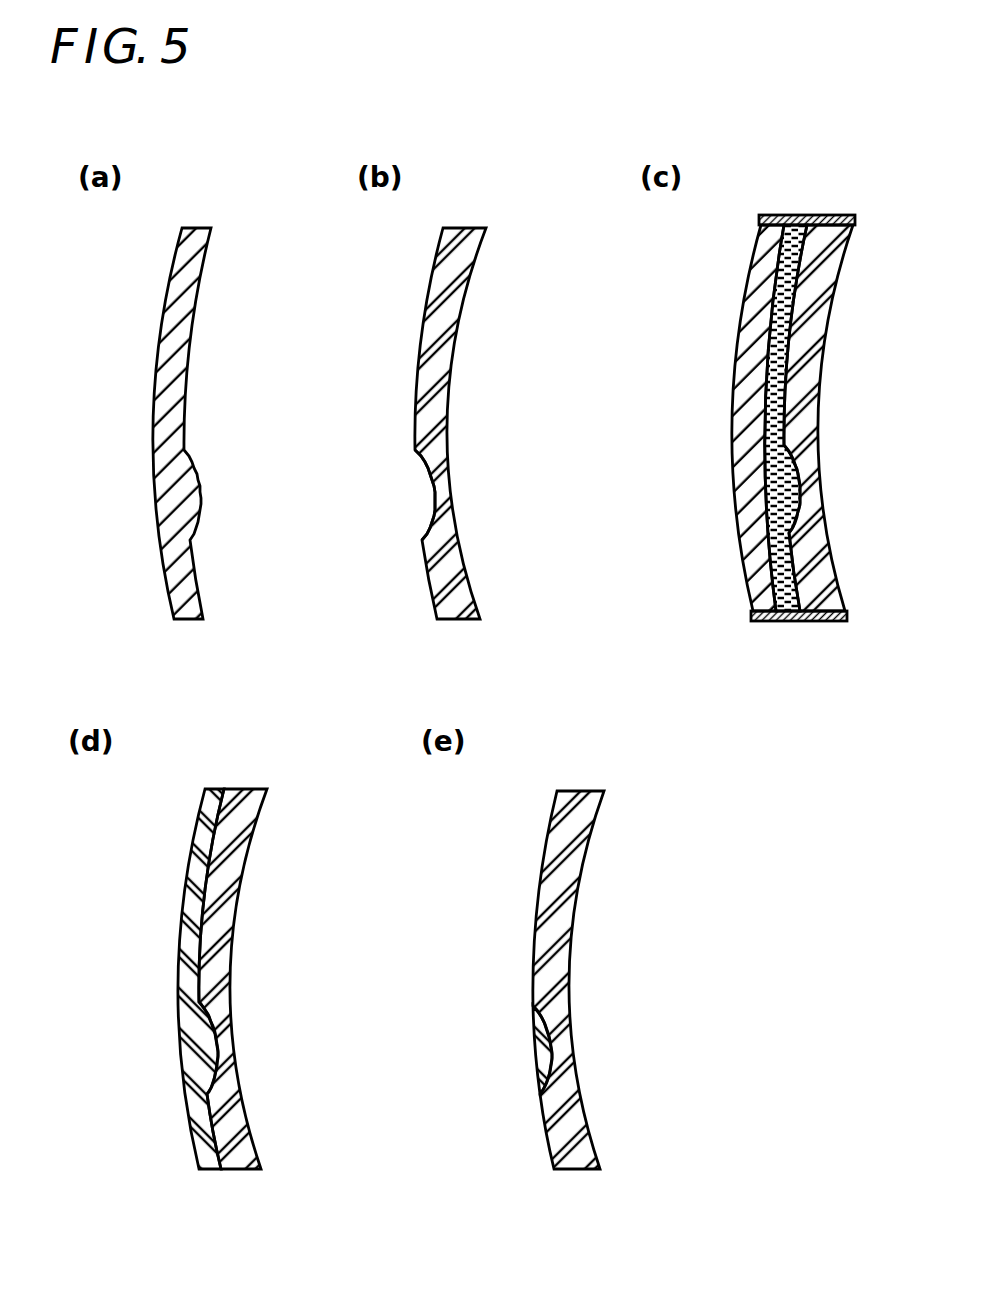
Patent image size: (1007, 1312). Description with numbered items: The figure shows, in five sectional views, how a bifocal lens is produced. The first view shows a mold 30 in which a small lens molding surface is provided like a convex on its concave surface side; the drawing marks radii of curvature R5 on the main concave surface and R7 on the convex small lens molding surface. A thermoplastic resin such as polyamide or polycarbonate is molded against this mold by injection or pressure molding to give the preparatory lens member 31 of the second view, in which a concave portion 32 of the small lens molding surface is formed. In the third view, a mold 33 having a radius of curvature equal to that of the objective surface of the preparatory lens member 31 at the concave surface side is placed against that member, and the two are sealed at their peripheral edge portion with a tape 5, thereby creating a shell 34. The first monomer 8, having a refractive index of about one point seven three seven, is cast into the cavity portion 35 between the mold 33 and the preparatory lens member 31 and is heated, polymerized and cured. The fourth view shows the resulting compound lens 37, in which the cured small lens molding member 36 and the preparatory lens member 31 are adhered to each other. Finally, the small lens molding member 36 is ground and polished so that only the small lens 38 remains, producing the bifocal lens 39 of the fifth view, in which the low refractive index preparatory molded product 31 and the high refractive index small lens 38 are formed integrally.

The tape 5 is at (797, 216).
The first monomer 8 is at (778, 303).
The mold 30 is at (170, 324).
The preparatory lens member 31 is at (447, 341).
The concave portion 32 is at (395, 465).
The mold 33 is at (748, 359).
The shell 34 is at (783, 393).
The cavity portion 35 is at (799, 560).
The small lens molding member 36 is at (185, 957).
The compound lens 37 is at (219, 979).
The small lens 38 is at (540, 1048).
The bifocal lens 39 is at (581, 984).
The radius of curvature R5 is at (246, 354).
The radius of curvature R7 is at (258, 493).